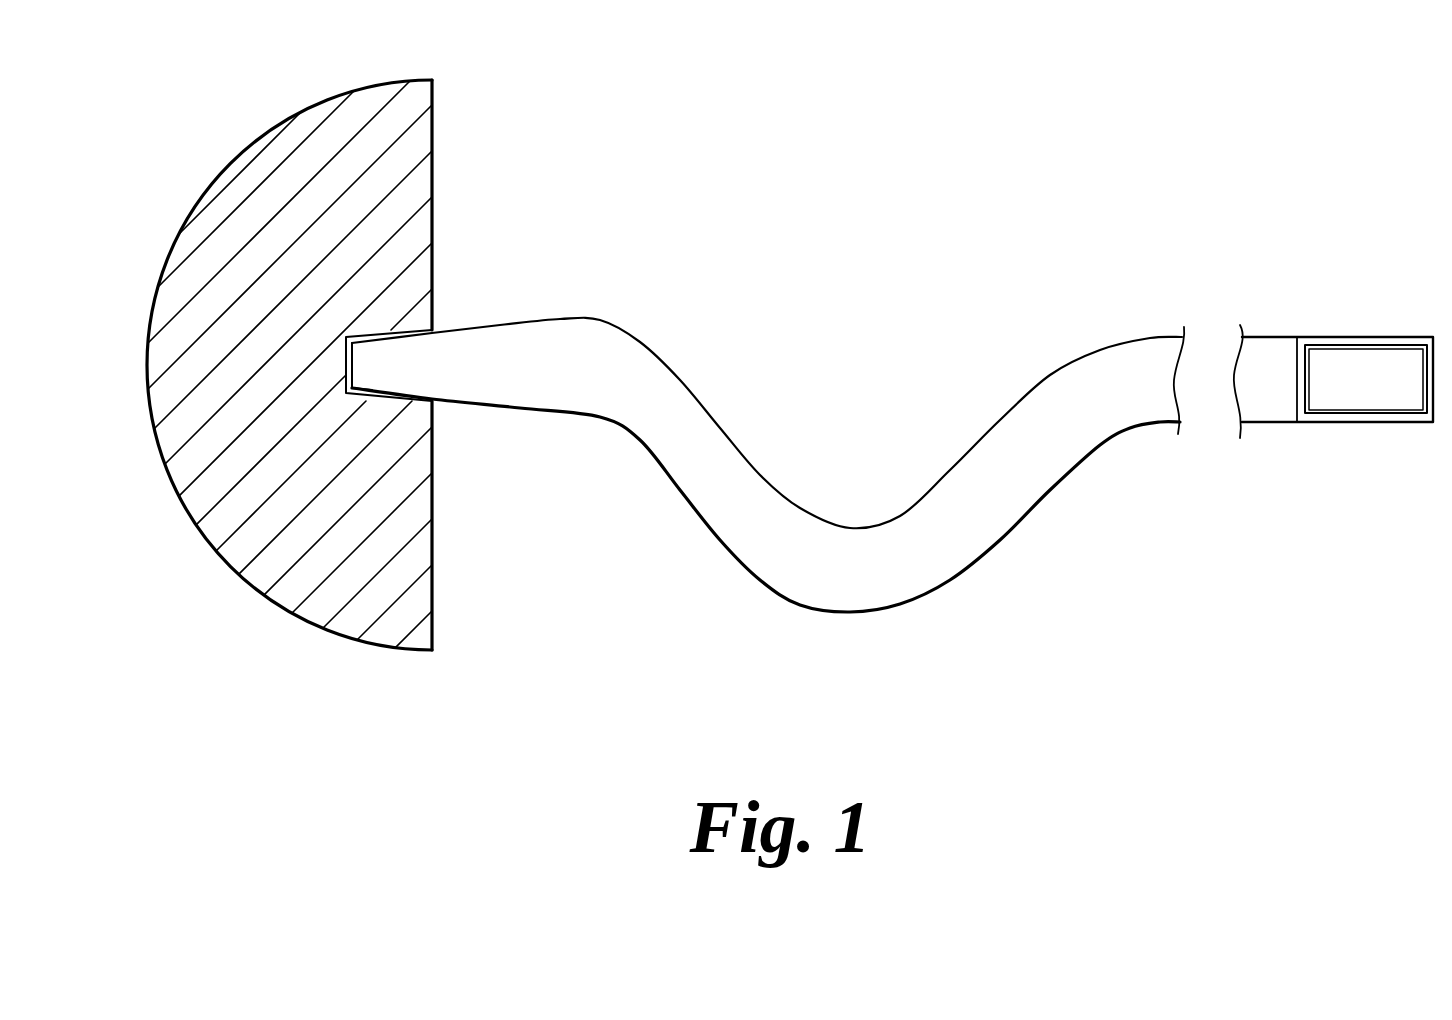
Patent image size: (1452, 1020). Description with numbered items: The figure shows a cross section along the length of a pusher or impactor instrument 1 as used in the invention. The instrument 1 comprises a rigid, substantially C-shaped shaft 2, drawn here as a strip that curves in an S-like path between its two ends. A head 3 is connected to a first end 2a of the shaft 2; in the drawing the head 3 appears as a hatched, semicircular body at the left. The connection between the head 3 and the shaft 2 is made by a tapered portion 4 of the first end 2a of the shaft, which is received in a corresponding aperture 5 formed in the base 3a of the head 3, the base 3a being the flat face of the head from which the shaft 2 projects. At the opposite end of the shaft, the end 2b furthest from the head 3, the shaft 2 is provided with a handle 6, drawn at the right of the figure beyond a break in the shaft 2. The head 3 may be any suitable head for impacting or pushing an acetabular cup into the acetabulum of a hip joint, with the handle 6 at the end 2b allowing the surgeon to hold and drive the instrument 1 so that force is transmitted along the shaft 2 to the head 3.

The instrument 1 is at (548, 171).
The shaft 2 is at (892, 446).
The first end of the shaft 2a is at (508, 387).
The end of the shaft furthest from the head 2b is at (1267, 355).
The head 3 is at (355, 389).
The base of the head 3a is at (434, 244).
The tapered portion 4 is at (393, 363).
The aperture 5 is at (410, 393).
The handle 6 is at (1338, 387).